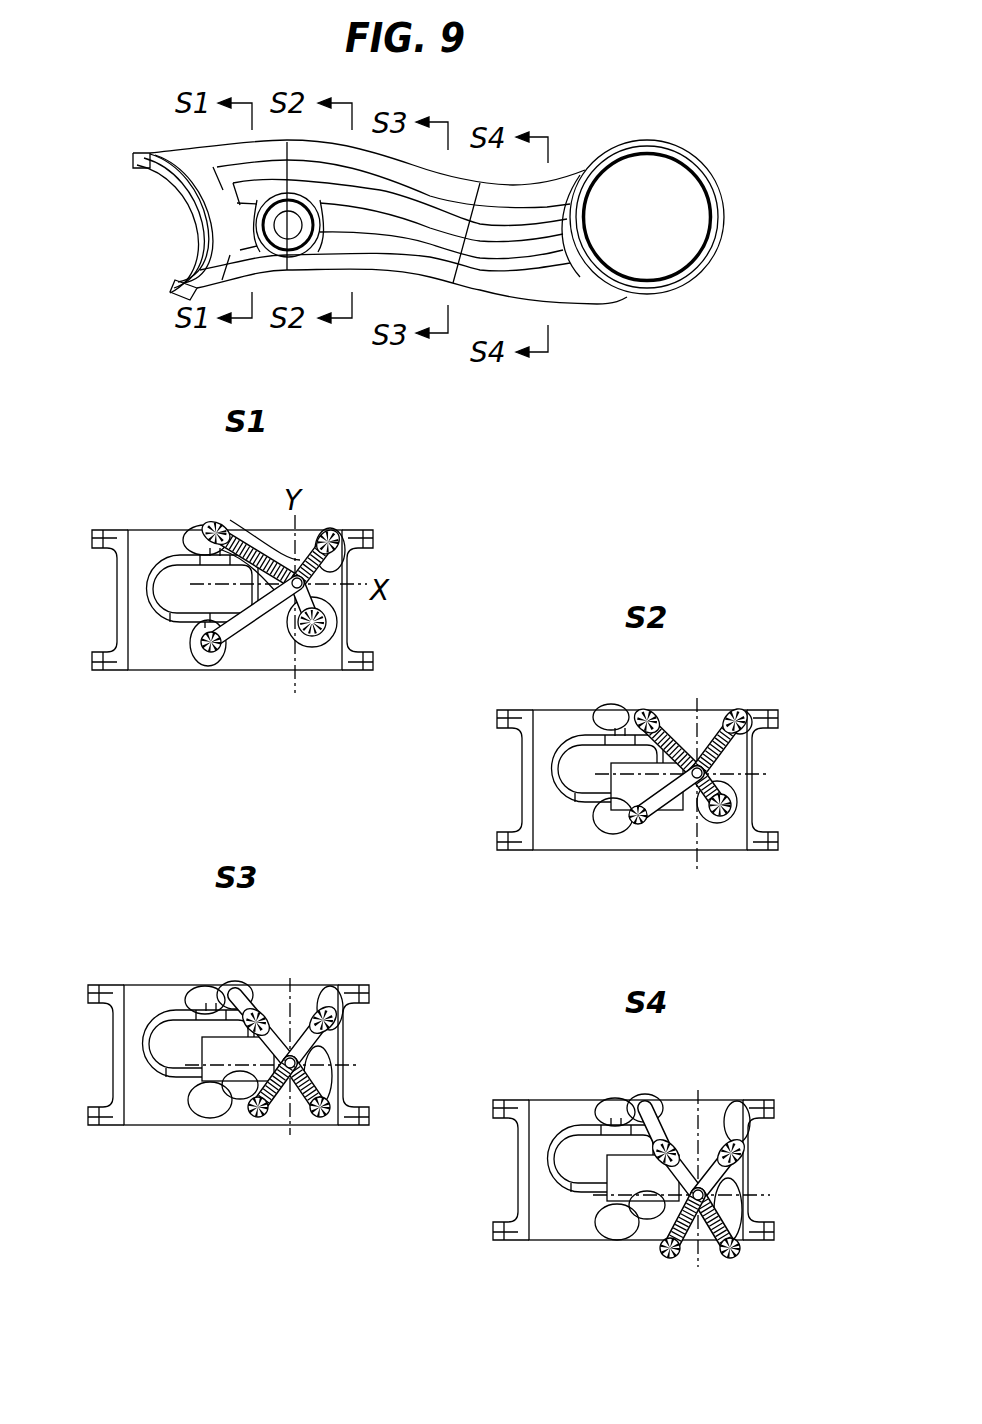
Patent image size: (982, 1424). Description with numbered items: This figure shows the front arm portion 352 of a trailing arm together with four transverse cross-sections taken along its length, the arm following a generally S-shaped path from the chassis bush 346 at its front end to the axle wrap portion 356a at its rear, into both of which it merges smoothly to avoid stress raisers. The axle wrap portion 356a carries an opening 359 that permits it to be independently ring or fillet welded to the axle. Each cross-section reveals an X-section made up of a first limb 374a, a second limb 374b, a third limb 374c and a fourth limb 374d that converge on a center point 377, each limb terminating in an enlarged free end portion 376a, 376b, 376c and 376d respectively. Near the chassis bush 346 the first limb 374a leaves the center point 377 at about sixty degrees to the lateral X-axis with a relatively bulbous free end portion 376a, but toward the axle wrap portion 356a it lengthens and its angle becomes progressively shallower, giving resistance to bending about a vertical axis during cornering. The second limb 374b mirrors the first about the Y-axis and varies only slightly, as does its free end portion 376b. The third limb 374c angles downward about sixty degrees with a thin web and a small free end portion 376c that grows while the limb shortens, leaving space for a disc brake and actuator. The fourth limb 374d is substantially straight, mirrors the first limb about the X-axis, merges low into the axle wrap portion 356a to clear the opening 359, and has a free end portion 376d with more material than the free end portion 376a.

The chassis bush 346 is at (680, 157).
The front arm portion 352 is at (605, 333).
The axle wrap portion 356a is at (160, 152).
The opening 359 is at (147, 600).
The first limb 374a is at (246, 527).
The second limb 374b is at (334, 532).
The third limb 374c is at (327, 662).
The fourth limb 374d is at (261, 683).
The free end portion 376a is at (213, 525).
The free end portion 376b is at (372, 537).
The free end portion 376c is at (327, 622).
The free end portion 376d is at (210, 643).
The center point 377 is at (300, 583).